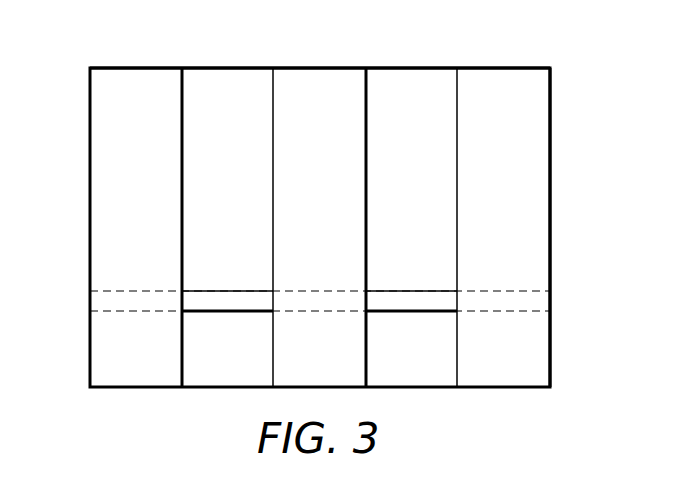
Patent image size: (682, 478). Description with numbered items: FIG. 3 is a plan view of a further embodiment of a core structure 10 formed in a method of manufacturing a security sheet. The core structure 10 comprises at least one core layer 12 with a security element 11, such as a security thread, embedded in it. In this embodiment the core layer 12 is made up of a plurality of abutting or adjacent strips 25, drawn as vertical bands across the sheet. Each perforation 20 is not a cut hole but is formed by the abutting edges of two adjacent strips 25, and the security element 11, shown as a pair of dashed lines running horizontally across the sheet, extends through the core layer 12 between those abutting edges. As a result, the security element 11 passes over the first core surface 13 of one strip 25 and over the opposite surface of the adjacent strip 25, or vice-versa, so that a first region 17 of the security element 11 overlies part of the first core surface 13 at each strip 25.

The core structure 10 is at (82, 98).
The security element 11 is at (411, 298).
The core layer 12 is at (520, 66).
The first core surface 13 is at (540, 366).
The first region 17 is at (232, 313).
The perforation 20 is at (272, 155).
The strips 25 is at (134, 80).